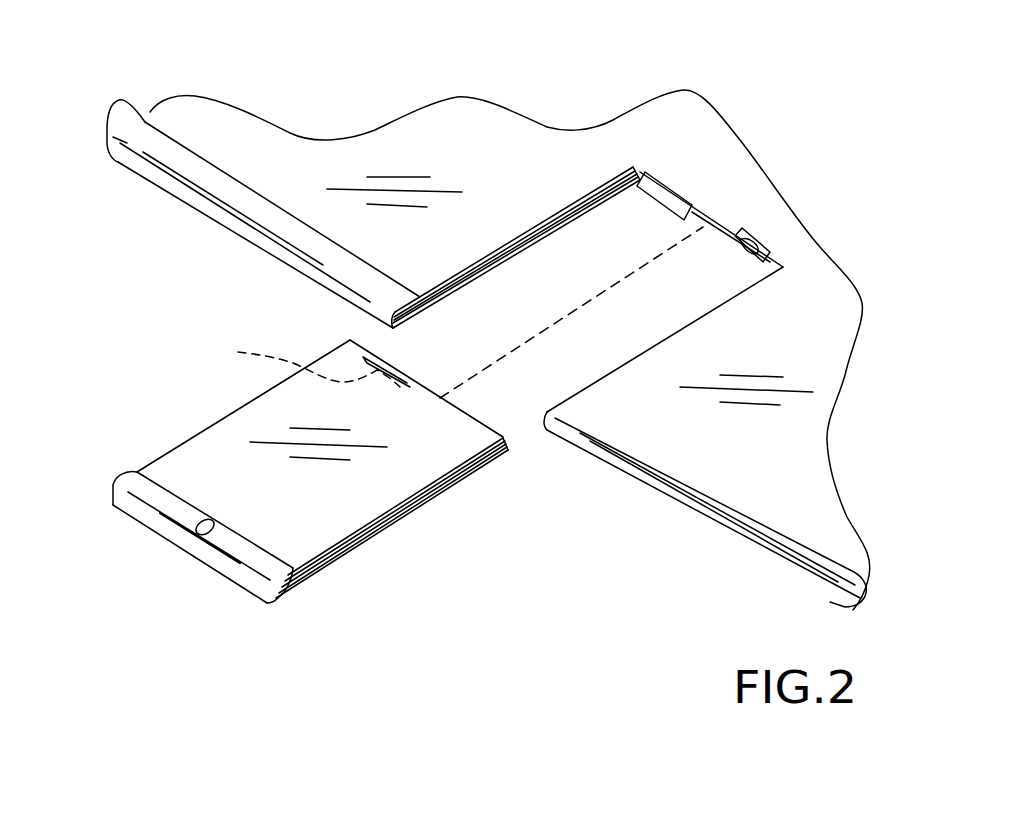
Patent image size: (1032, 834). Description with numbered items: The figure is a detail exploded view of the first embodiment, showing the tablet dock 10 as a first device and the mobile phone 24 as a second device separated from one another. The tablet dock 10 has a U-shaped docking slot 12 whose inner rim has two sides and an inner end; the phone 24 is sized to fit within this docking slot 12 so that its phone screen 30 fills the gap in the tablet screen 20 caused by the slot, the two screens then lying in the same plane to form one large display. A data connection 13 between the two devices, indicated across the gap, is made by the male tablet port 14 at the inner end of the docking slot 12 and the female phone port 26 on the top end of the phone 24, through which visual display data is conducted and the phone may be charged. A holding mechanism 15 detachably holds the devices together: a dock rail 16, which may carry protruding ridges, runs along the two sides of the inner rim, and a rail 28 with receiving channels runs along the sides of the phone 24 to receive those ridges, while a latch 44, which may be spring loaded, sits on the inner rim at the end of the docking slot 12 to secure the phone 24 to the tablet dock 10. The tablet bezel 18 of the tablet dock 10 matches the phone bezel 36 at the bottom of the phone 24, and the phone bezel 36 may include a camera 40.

The tablet dock 10 is at (800, 167).
The docking slot 12 is at (680, 316).
The data connection 13 is at (650, 207).
The tablet port 14 is at (667, 193).
The holding mechanism 15 is at (637, 352).
The dock rail 16 is at (565, 207).
The tablet bezel 18 is at (347, 274).
The tablet screen 20 is at (688, 105).
The mobile phone 24 is at (167, 600).
The phone port 26 is at (301, 359).
The rail 28 is at (407, 513).
The phone screen 30 is at (287, 520).
The phone bezel 36 is at (132, 507).
The camera 40 is at (210, 522).
The latch 44 is at (745, 240).